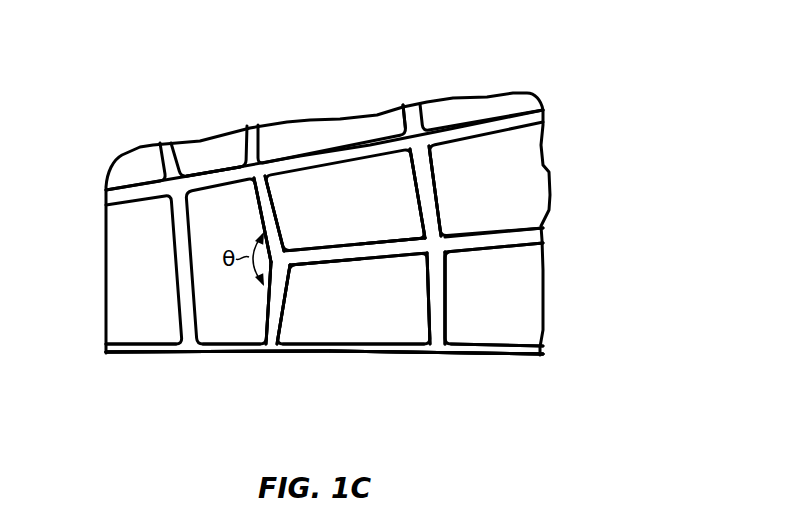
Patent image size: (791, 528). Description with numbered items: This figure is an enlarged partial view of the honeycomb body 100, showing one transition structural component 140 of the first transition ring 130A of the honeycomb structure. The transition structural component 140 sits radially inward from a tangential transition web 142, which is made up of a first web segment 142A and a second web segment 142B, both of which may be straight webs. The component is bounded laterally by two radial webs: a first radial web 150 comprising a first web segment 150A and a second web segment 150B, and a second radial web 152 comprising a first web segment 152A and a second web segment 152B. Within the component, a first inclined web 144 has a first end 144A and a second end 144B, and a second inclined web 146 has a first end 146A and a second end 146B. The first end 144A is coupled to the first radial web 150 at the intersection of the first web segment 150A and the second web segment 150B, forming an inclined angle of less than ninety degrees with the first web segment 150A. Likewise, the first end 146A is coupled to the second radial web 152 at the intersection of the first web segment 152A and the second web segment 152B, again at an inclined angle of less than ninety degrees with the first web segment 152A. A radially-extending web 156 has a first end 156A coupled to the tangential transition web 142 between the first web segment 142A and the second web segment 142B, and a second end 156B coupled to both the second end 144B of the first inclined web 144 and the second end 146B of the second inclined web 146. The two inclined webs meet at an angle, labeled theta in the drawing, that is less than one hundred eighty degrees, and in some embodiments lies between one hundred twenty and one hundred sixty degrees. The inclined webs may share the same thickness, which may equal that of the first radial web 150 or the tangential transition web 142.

The tire tread 100 is at (345, 194).
The first transition ring 130A is at (264, 366).
The transition structural component 140 is at (204, 255).
The tangential transition web 142 is at (448, 200).
The first web segment 142A is at (437, 168).
The second web segment 142B is at (441, 316).
The first inclined web 144 is at (290, 207).
The first end 144A is at (274, 189).
The second end 144B is at (284, 241).
The second inclined web 146 is at (290, 309).
The first end 146A is at (281, 326).
The second end 146B is at (312, 264).
The first radial web 150 is at (283, 160).
The first web segment 150A is at (400, 107).
The second web segment 150B is at (197, 173).
The second radial web 152 is at (292, 366).
The first web segment 152A is at (424, 356).
The second web segment 152B is at (215, 357).
The radially-extending web 156 is at (362, 238).
The first end 156A is at (412, 256).
The second end 156B is at (310, 266).